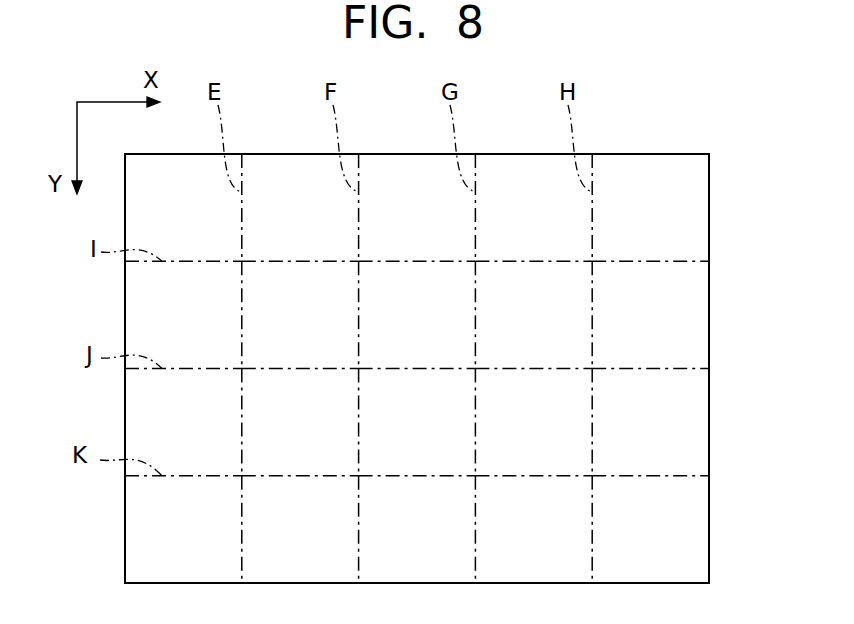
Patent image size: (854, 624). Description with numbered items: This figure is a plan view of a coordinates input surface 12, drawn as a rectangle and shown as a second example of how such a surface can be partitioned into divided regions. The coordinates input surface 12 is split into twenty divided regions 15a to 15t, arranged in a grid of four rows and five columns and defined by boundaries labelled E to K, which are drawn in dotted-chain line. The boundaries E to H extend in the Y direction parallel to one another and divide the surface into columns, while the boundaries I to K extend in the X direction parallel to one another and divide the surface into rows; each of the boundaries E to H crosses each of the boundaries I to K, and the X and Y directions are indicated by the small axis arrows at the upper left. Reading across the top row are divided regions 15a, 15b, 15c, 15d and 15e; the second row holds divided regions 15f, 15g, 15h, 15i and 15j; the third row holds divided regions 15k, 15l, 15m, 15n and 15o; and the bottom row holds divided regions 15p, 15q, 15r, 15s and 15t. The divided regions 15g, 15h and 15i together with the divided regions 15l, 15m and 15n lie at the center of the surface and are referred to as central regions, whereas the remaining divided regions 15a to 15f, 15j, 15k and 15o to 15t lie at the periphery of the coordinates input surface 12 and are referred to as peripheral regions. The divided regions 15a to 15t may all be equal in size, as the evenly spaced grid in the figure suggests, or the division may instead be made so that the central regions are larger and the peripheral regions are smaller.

The coordinates input surface 12 is at (668, 145).
The divided region 15a is at (159, 225).
The divided region 15b is at (276, 225).
The divided region 15c is at (393, 225).
The divided region 15d is at (510, 225).
The divided region 15e is at (627, 225).
The divided region 15f is at (160, 327).
The divided region 15g is at (276, 327).
The divided region 15h is at (393, 327).
The divided region 15i is at (512, 327).
The divided region 15j is at (629, 327).
The divided region 15k is at (159, 434).
The divided region 15l is at (278, 434).
The divided region 15m is at (392, 434).
The divided region 15n is at (510, 434).
The divided region 15o is at (627, 434).
The divided region 15p is at (159, 544).
The divided region 15q is at (276, 544).
The divided region 15r is at (395, 544).
The divided region 15s is at (511, 544).
The divided region 15t is at (628, 544).